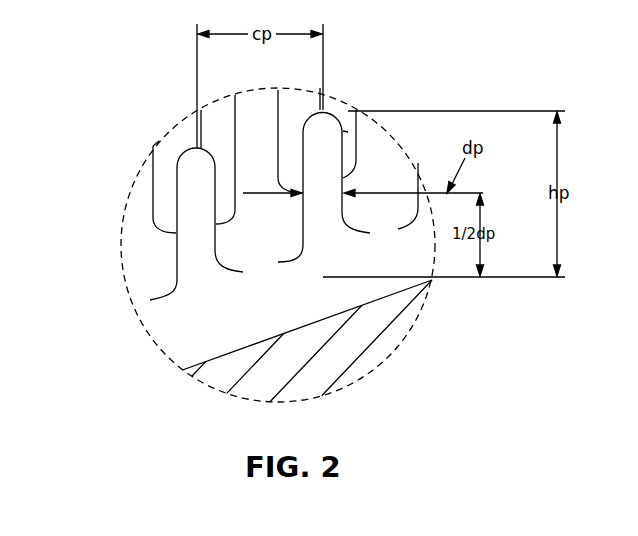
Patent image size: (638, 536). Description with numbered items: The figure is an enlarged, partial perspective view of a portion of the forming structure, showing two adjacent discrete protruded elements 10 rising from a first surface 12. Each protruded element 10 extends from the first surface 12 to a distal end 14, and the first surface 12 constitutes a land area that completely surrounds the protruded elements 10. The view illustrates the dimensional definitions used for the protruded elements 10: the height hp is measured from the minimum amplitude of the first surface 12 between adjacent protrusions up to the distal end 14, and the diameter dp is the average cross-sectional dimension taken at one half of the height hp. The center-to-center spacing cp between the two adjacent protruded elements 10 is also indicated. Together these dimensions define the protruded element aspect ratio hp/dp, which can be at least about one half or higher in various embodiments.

The discrete protruded elements 10 is at (170, 201).
The first surface 12 is at (247, 341).
The distal end 14 is at (338, 106).